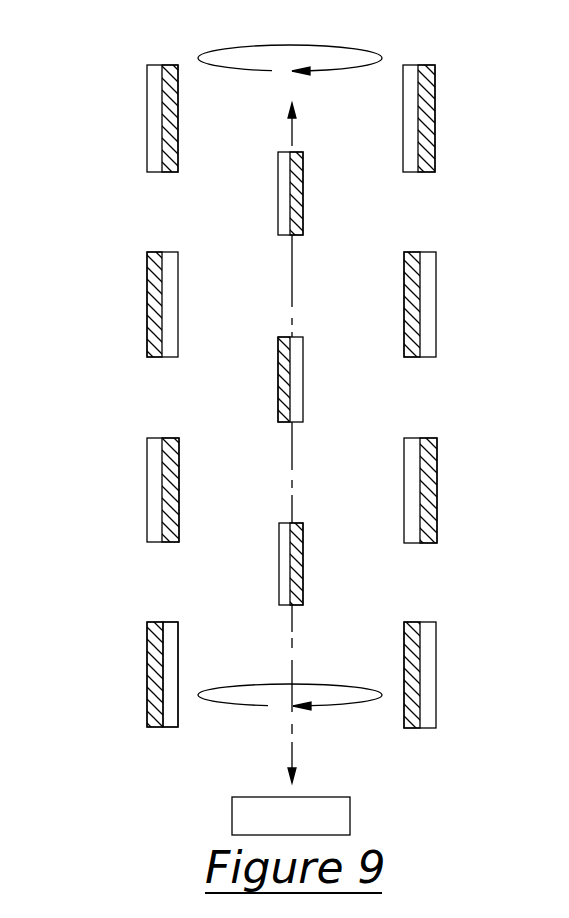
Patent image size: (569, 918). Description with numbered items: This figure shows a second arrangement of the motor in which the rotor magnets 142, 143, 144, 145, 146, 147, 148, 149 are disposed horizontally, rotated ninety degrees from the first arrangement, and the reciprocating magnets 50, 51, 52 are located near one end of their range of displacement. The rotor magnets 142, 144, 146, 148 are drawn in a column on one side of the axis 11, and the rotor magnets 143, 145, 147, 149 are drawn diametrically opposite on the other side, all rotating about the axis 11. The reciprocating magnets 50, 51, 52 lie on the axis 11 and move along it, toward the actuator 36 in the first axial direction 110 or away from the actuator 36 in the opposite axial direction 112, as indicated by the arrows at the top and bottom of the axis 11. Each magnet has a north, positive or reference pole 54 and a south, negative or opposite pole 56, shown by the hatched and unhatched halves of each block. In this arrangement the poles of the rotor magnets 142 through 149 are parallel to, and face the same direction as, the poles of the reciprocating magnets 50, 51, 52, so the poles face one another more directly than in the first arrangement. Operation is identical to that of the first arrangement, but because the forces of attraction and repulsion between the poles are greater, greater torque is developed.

The axis 11 is at (292, 135).
The opposite axial direction 112 is at (288, 111).
The first axial direction 110 is at (283, 776).
The actuator 36 is at (350, 817).
The reciprocating magnet 50 is at (300, 605).
The reciprocating magnet 51 is at (300, 422).
The reciprocating magnet 52 is at (300, 235).
The north pole 54 is at (152, 698).
The south pole 56 is at (192, 673).
The rotor magnet 142 is at (145, 655).
The rotor magnet 143 is at (420, 622).
The rotor magnet 144 is at (162, 438).
The rotor magnet 145 is at (420, 438).
The rotor magnet 146 is at (158, 252).
The rotor magnet 147 is at (420, 252).
The rotor magnet 148 is at (162, 66).
The rotor magnet 149 is at (418, 66).